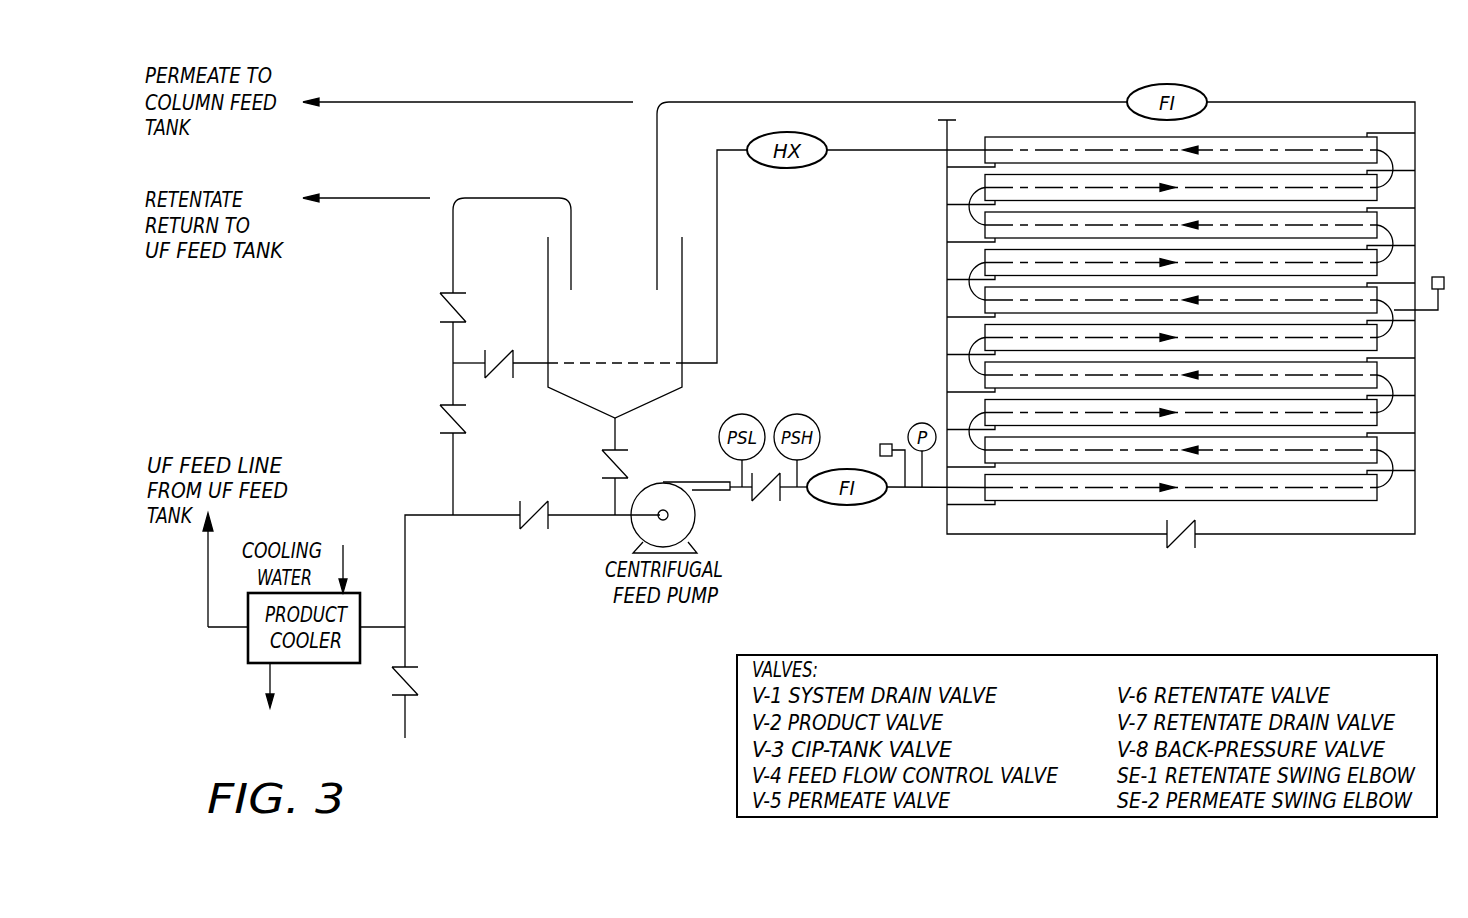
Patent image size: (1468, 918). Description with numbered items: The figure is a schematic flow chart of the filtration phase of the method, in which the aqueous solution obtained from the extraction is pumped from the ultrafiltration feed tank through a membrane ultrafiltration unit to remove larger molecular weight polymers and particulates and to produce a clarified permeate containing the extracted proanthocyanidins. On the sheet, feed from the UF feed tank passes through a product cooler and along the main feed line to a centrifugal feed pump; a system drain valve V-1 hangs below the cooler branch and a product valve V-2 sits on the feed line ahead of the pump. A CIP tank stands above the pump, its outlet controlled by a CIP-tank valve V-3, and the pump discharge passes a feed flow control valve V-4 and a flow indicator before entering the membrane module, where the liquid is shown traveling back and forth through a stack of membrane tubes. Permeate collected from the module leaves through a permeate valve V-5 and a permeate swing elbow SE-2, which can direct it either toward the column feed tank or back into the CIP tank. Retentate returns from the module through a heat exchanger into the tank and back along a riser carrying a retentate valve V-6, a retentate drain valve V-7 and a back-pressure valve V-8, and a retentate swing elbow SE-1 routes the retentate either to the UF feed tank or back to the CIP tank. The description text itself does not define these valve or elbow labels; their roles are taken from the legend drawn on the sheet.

The system drain valve V-1 is at (428, 681).
The product valve V-2 is at (535, 527).
The CIP-tank valve V-3 is at (596, 464).
The feed flow control valve V-4 is at (765, 500).
The permeate valve V-5 is at (1180, 546).
The retentate valve V-6 is at (503, 351).
The retentate drain valve V-7 is at (432, 419).
The back-pressure valve V-8 is at (432, 307).
The retentate swing elbow SE-1 is at (500, 226).
The permeate swing elbow SE-2 is at (879, 177).